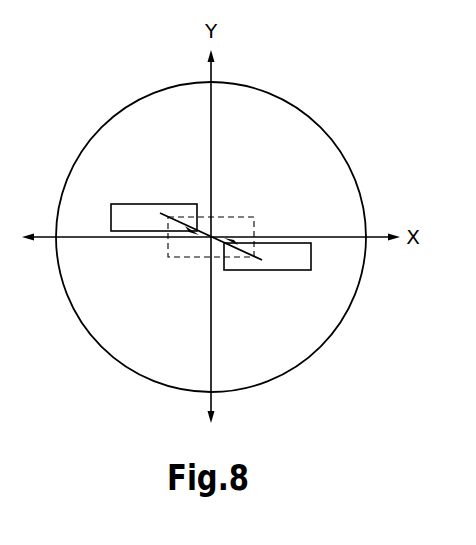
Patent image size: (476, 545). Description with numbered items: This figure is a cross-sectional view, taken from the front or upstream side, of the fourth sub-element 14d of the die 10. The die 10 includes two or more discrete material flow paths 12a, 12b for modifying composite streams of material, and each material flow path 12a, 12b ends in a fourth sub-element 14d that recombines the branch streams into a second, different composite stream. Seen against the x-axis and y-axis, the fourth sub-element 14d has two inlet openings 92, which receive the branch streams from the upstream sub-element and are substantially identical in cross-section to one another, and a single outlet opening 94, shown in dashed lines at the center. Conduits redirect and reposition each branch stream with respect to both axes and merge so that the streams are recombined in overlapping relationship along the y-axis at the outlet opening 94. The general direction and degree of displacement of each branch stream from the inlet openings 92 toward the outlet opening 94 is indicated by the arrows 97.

The die 10 is at (340, 99).
The material flow path 12a is at (144, 331).
The material flow path 12b is at (288, 282).
The fourth sub-element 14d is at (167, 204).
The inlet opening 92 is at (122, 204).
The outlet opening 94 is at (238, 217).
The arrows 97 is at (180, 222).